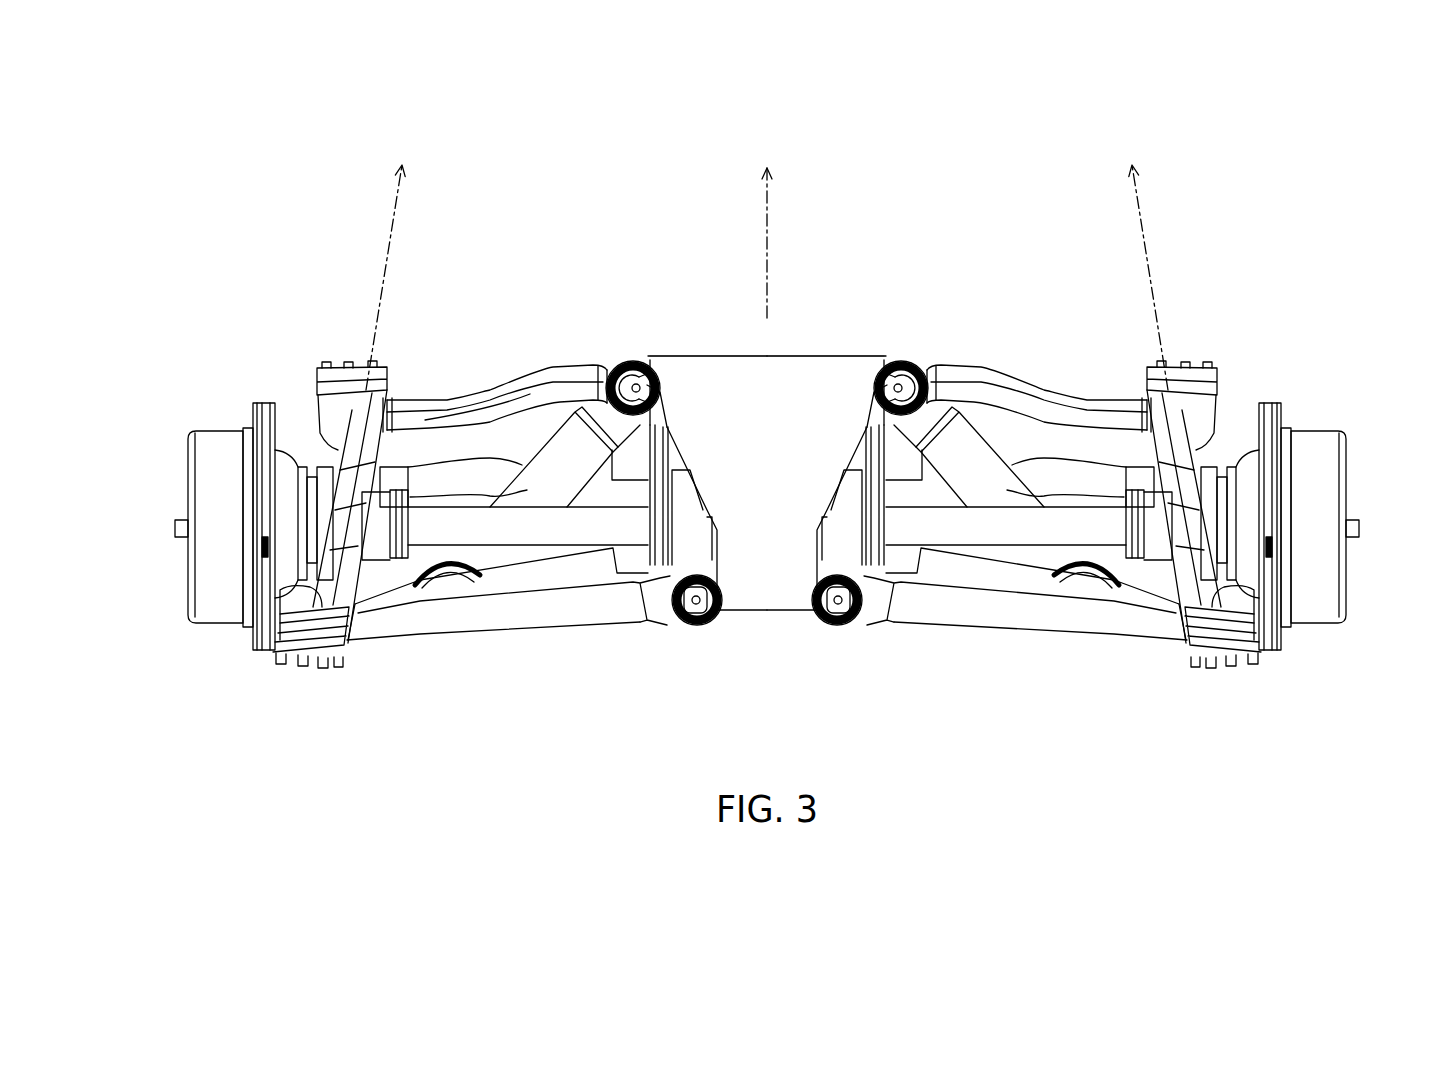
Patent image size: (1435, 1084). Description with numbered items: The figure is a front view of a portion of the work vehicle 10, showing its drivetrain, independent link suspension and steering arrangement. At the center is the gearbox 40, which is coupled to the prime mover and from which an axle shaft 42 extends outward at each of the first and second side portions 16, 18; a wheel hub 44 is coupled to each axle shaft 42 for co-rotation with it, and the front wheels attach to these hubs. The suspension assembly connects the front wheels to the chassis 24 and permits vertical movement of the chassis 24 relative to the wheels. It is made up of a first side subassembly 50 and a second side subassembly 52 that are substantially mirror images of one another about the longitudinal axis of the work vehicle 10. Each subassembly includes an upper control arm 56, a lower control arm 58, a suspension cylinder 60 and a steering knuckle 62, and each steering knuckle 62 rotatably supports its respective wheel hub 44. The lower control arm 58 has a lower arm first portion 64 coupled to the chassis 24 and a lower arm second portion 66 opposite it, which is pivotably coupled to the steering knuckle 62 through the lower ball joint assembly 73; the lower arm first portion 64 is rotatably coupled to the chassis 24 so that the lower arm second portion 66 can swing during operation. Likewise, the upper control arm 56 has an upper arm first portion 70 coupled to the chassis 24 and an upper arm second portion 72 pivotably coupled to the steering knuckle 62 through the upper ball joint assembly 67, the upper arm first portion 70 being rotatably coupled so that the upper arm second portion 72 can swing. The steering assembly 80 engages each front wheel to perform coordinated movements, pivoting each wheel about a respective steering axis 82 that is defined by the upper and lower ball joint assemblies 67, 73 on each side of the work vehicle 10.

The work vehicle 10 is at (465, 145).
The first side portion 16 is at (215, 792).
The second side portion 18 is at (1302, 792).
The chassis 24 is at (646, 310).
The gearbox 40 is at (770, 222).
The axle shaft 42 is at (573, 527).
The wheel hub 44 is at (205, 470).
The first side subassembly 50 is at (404, 678).
The second side subassembly 52 is at (1040, 691).
The upper control arm 56 is at (493, 389).
The lower control arm 58 is at (450, 608).
The suspension cylinder 60 is at (560, 463).
The steering knuckle 62 is at (318, 370).
The lower arm first portion 64 is at (530, 604).
The lower arm second portion 66 is at (370, 628).
The upper ball joint assembly 67 is at (335, 350).
The upper arm first portion 70 is at (580, 360).
The upper arm second portion 72 is at (422, 390).
The lower ball joint assembly 73 is at (297, 682).
The steering assembly 80 is at (555, 326).
The steering axis 82 is at (387, 254).